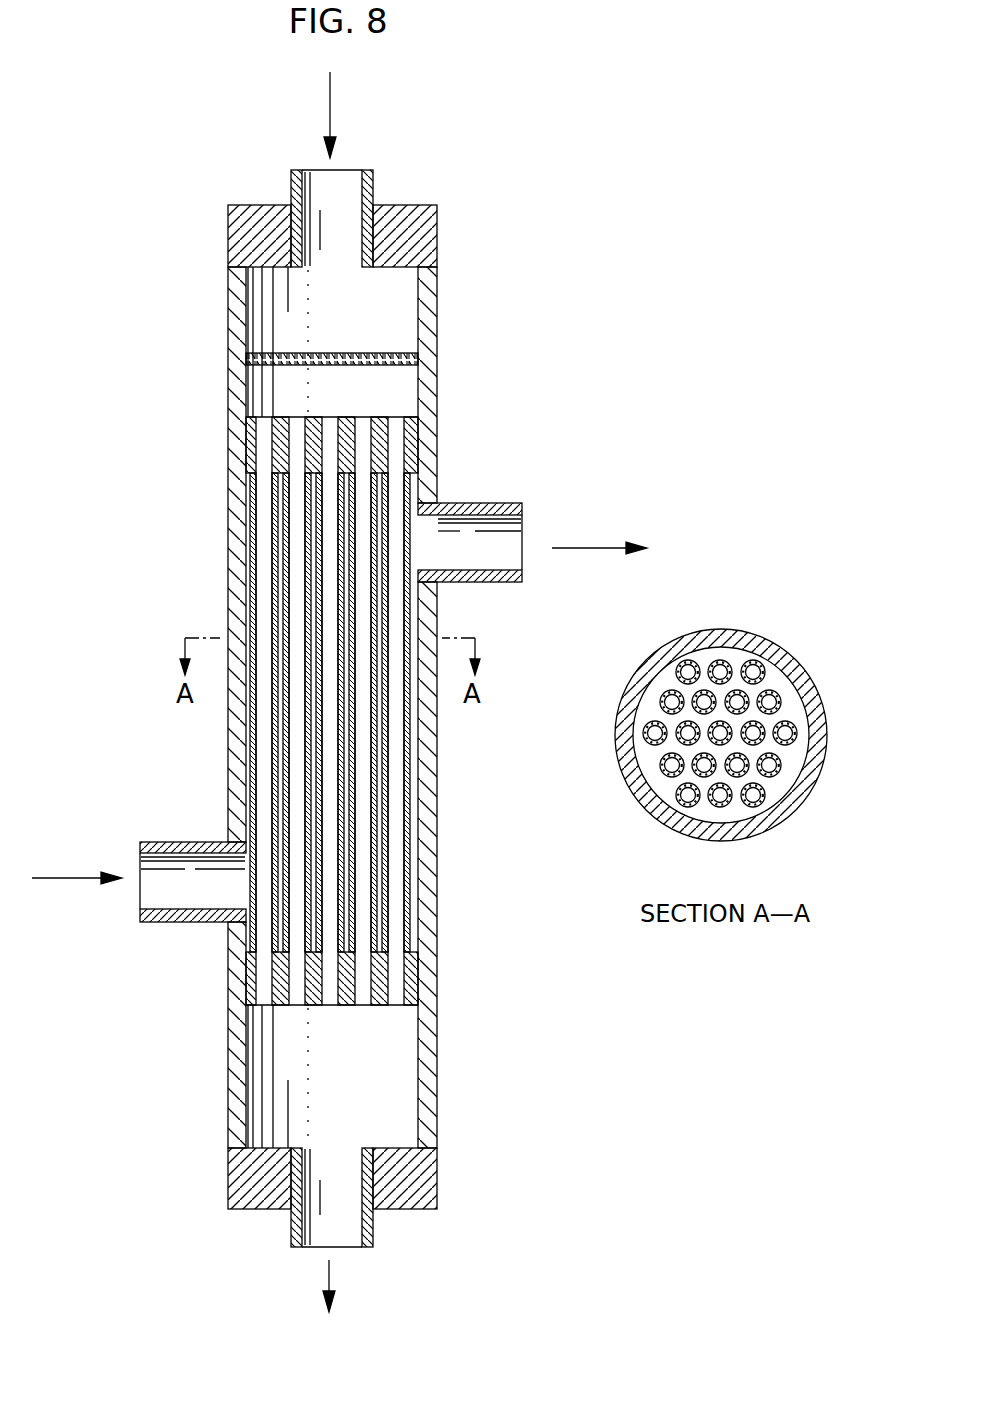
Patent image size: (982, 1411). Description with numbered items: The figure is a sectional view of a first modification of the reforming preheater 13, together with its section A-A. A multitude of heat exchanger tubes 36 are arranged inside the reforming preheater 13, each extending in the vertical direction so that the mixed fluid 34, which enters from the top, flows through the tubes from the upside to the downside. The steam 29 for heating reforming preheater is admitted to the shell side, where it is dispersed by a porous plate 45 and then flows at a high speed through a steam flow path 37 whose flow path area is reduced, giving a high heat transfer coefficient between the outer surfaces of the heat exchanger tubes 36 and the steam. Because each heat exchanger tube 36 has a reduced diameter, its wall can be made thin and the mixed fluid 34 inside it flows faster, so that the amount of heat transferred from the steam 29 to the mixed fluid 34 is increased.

The reforming preheater 13 is at (228, 530).
The steam for heating reforming preheater 29 is at (83, 880).
The mixed fluid 34 is at (332, 100).
The heat exchanger tube 36 is at (395, 787).
The steam flow path 37 is at (376, 834).
The porous plate 45 is at (395, 353).